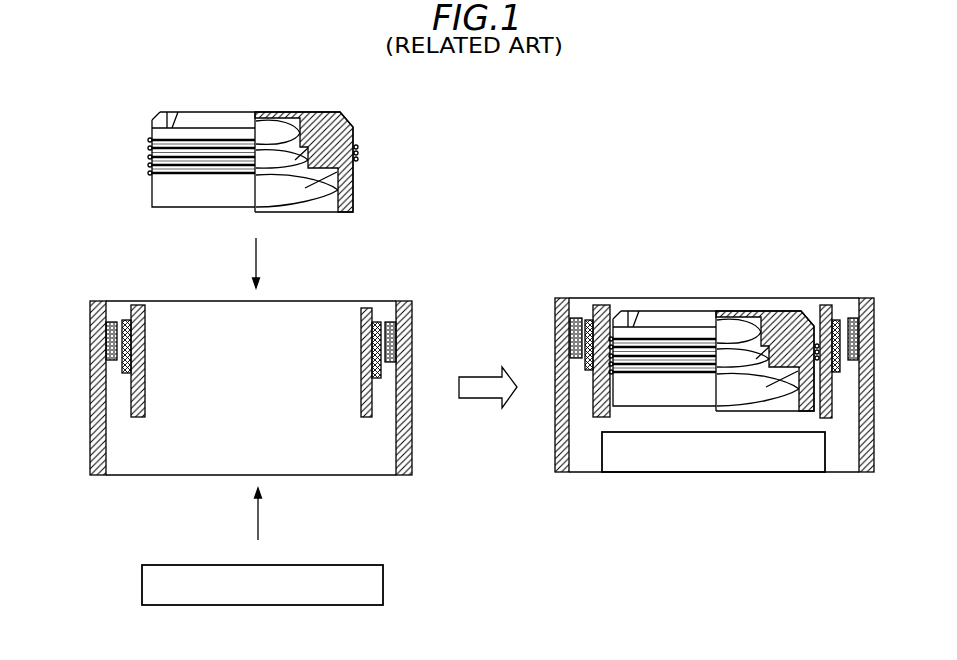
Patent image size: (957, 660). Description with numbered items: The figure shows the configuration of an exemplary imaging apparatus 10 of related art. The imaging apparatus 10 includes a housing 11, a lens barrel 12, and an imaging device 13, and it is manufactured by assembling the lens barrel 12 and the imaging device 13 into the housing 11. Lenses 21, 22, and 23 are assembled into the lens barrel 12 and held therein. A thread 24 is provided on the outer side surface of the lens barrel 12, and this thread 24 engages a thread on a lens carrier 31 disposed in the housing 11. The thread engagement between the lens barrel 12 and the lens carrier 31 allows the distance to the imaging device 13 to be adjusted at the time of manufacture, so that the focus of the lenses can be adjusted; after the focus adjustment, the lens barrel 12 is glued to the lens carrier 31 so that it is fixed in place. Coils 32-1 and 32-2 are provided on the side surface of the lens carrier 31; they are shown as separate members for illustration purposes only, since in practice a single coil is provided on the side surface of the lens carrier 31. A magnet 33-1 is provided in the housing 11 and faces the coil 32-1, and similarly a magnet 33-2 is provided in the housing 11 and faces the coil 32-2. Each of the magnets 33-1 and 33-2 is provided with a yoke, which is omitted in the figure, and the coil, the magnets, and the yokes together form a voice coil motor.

The imaging apparatus 10 is at (870, 474).
The housing 11 is at (248, 398).
The lens barrel 12 is at (282, 134).
The imaging device 13 is at (383, 583).
The lens 21 is at (270, 128).
The lens 22 is at (317, 117).
The lens 23 is at (386, 136).
The thread 24 is at (148, 157).
The lens carrier 31 is at (366, 418).
The coil 32-1 is at (128, 319).
The coil 32-2 is at (373, 322).
The magnet 33-1 is at (108, 320).
The magnet 33-2 is at (392, 320).